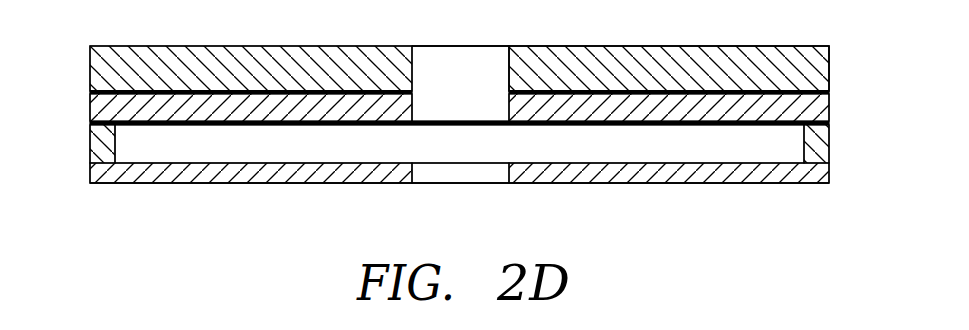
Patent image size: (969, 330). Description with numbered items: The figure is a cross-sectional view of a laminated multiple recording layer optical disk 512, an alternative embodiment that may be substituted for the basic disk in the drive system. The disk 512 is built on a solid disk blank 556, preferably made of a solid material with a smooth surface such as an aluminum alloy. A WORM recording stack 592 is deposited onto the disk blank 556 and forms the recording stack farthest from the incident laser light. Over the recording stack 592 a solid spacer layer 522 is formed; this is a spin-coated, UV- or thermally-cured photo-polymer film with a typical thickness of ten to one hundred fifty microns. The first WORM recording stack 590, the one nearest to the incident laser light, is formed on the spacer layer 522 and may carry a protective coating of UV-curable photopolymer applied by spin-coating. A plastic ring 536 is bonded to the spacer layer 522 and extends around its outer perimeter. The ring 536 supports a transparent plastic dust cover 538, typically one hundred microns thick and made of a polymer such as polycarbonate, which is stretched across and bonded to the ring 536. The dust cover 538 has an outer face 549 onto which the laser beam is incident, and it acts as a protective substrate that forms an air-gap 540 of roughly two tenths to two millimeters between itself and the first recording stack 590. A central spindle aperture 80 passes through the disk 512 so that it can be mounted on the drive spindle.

The multiple recording layer recording disk 512 is at (195, 198).
The solid disk blank 556 is at (103, 69).
The WORM recording stack 592 is at (800, 75).
The spindle aperture 80 is at (473, 65).
The solid spacer layer 522 is at (630, 104).
The air-gap 540 is at (716, 145).
The plastic ring 536 is at (100, 145).
The first WORM recording stack 590 is at (790, 130).
The transparent plastic dust cover 538 is at (610, 173).
The outer face 549 is at (255, 183).